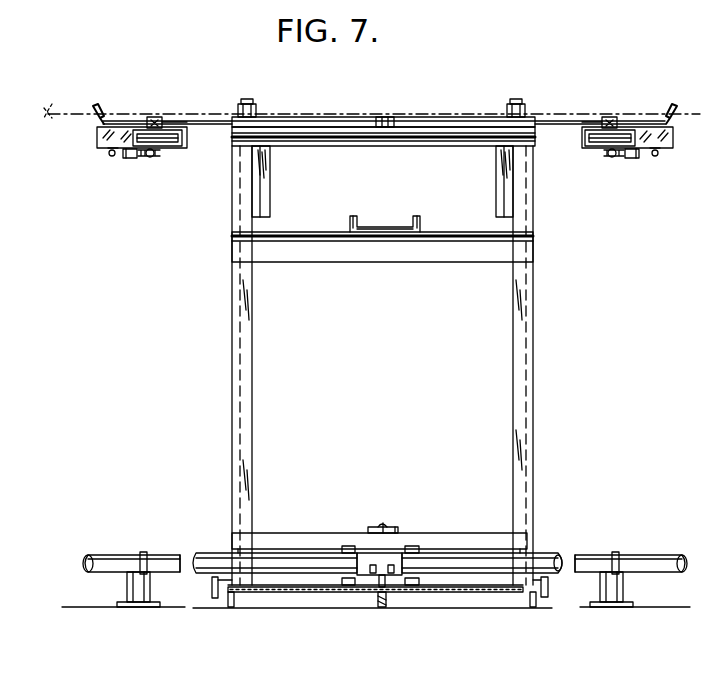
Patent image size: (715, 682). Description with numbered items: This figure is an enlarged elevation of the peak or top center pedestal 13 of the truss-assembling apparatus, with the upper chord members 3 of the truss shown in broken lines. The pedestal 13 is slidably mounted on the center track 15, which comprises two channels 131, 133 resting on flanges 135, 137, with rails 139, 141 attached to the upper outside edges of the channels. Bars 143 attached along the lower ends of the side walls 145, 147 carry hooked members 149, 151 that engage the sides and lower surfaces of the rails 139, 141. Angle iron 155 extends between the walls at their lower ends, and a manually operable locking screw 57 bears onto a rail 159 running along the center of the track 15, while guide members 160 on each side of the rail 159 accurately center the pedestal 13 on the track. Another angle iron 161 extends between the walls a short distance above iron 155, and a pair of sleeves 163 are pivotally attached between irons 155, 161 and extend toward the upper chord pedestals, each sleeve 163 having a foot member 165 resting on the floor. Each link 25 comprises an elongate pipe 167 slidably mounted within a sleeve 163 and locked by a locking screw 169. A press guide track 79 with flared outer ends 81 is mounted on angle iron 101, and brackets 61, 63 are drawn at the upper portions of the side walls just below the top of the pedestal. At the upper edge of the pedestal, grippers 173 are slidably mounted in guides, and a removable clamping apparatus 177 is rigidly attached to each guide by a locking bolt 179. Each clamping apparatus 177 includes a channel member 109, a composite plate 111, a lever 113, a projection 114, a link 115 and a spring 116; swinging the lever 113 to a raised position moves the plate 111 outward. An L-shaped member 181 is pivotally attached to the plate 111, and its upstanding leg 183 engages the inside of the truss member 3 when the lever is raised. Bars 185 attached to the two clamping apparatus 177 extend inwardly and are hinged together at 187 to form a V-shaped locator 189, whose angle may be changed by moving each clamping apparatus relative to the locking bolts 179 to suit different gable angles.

The upper chord members 3 is at (70, 114).
The peak or top center pedestal 13 is at (224, 343).
The center track 15 is at (292, 605).
The link 25 is at (95, 546).
The locking screw 57 is at (376, 525).
The guide bracket 61 is at (263, 198).
The channel member 63 is at (270, 182).
The press guide track 79 is at (378, 226).
The outer ends 81 is at (350, 222).
The angle iron 101 is at (374, 253).
The channel member 109 is at (187, 138).
The composite plate 111 is at (165, 146).
The lever 113 is at (96, 104).
The projection 114 is at (127, 159).
The link 115 is at (109, 153).
The spring 116 is at (148, 158).
The channel 131 is at (310, 593).
The channel 133 is at (452, 593).
The flange 135 is at (234, 600).
The flange 137 is at (388, 600).
The rail 139 is at (245, 560).
The rail 141 is at (512, 560).
The bars 143 is at (246, 556).
The side wall 145 is at (231, 400).
The side wall 147 is at (534, 408).
The hooked member 149 is at (212, 590).
The hooked member 151 is at (548, 587).
The angle iron 155 is at (362, 556).
The rail 159 is at (396, 540).
The guide members 160 is at (350, 586).
The angle iron 161 is at (385, 524).
The sleeve 163 is at (176, 556).
The foot member 165 is at (127, 590).
The pipe 167 is at (122, 556).
The locking screw 169 is at (143, 552).
The grippers 173 is at (238, 106).
The clamping apparatus 177 is at (223, 110).
The locking bolt 179 is at (248, 99).
The L-shaped member 181 is at (175, 122).
The upstanding leg 183 is at (154, 117).
The bars 185 is at (306, 122).
The hinge 187 is at (384, 117).
The V-shaped locator 189 is at (337, 105).